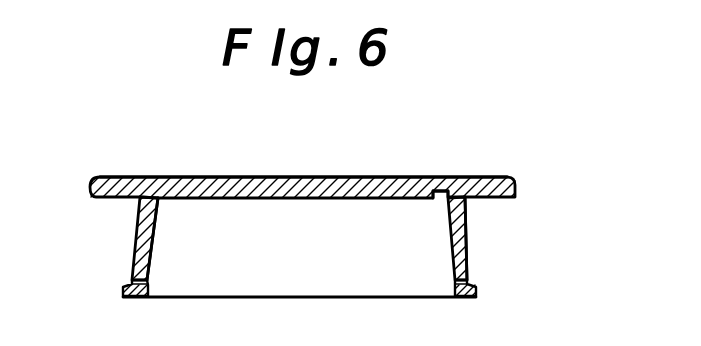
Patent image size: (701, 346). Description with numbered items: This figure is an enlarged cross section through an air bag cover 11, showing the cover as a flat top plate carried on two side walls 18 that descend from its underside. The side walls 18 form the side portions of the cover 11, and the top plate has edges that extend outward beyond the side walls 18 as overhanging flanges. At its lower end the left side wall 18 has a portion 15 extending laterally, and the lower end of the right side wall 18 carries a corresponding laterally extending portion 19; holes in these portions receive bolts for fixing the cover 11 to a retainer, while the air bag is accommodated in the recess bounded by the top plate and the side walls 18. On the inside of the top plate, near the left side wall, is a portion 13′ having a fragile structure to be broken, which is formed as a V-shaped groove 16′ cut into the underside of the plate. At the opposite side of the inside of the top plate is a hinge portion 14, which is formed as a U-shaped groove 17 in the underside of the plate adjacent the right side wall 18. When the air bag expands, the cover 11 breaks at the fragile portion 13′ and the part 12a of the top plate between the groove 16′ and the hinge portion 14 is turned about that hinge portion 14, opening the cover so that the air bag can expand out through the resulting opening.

The cover 11 is at (397, 146).
The part of top plate 12a is at (293, 178).
The portion to be broken 13′ is at (161, 176).
The hinge portion 14 is at (438, 177).
The laterally extending portion 15 is at (132, 291).
The V-shaped groove 16′ is at (160, 199).
The U-shaped groove 17 is at (440, 200).
The side wall 18 is at (468, 227).
The right foot 19 is at (470, 285).